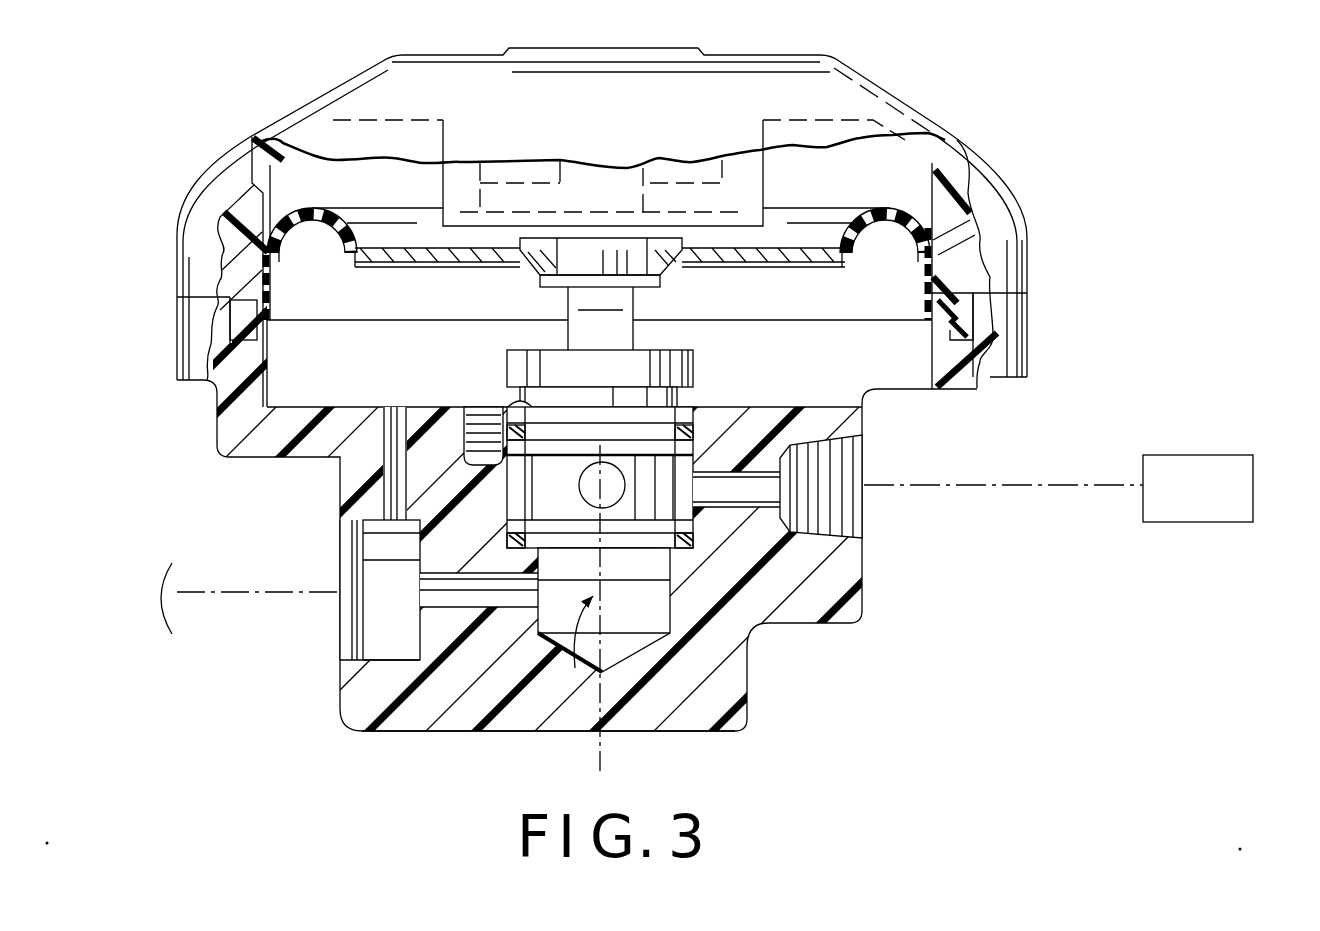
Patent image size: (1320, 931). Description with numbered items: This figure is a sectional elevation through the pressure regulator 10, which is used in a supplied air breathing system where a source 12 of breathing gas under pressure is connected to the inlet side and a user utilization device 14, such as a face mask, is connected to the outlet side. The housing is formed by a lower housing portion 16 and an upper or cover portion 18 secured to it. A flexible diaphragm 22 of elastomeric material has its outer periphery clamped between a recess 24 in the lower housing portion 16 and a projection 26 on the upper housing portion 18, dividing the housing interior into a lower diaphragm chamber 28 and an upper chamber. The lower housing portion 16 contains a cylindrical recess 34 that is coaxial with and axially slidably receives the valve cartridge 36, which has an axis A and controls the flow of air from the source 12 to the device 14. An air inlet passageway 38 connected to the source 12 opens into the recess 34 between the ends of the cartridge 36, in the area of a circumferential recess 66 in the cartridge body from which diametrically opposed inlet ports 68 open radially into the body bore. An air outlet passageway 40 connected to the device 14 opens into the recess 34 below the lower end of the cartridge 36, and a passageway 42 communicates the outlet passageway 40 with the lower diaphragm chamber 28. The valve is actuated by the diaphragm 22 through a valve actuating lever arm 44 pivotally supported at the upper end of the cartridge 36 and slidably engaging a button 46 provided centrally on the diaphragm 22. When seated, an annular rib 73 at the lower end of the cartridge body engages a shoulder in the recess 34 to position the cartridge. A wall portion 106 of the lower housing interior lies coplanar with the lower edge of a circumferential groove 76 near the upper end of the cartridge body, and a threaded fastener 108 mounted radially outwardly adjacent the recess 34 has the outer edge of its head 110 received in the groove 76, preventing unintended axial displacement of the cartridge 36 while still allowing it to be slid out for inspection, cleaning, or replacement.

The pressure regulator 10 is at (1072, 128).
The source of breathing gas 12 is at (1217, 450).
The user utilization device 14 is at (220, 594).
The lower housing portion 16 is at (198, 404).
The upper housing portion 18 is at (182, 166).
The flexible diaphragm 22 is at (398, 212).
The recess 24 is at (940, 331).
The projection 26 is at (935, 278).
The lower diaphragm chamber 28 is at (900, 248).
The cylindrical recess 34 is at (668, 580).
The valve cartridge 36 is at (497, 732).
The air inlet passageway 38 is at (730, 492).
The air outlet passageway 40 is at (448, 598).
The passageway 42 is at (385, 460).
The valve actuating lever arm 44 is at (637, 311).
The button 46 is at (586, 246).
The circumferential recess 66 is at (680, 470).
The inlet ports 68 is at (610, 495).
The annular rib 73 is at (512, 532).
The circumferential groove 76 is at (682, 402).
The wall portion 106 is at (767, 400).
The threaded fastener 108 is at (482, 398).
The head 110 is at (543, 395).
The axis A is at (602, 748).